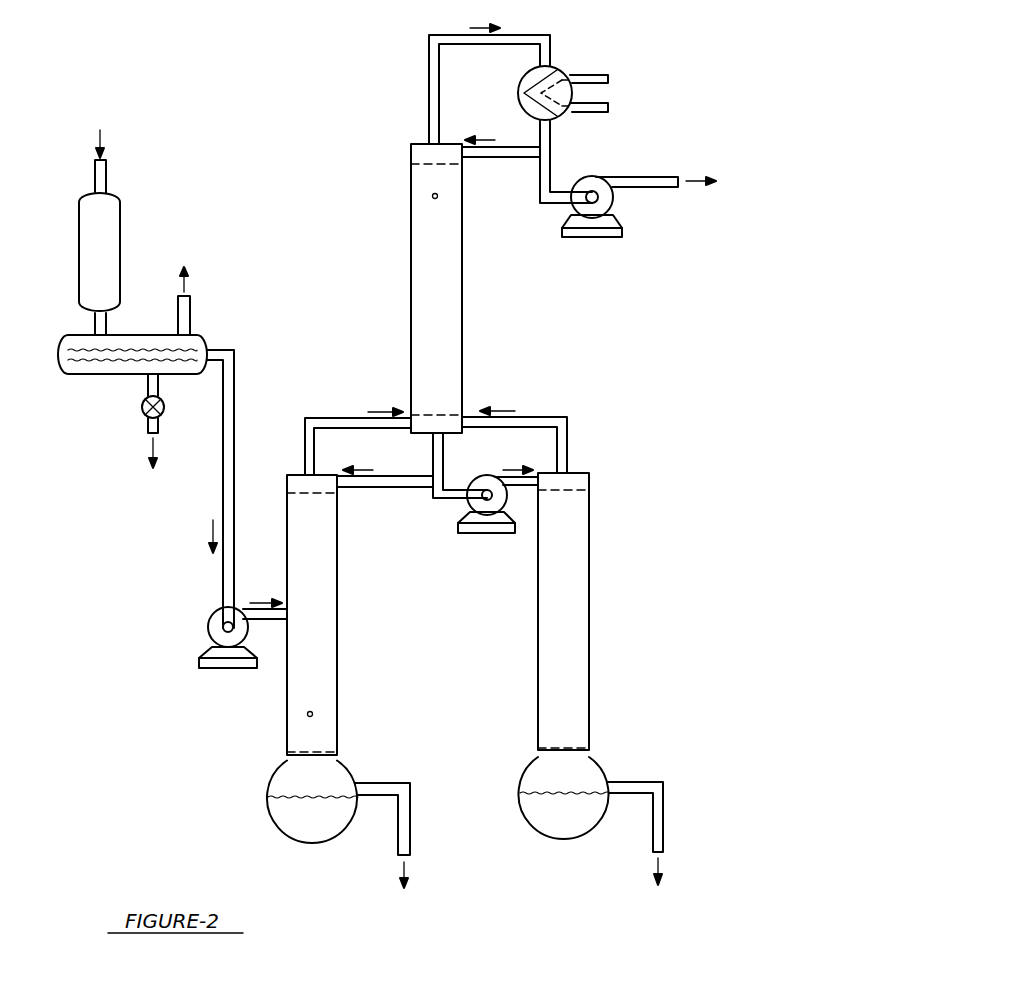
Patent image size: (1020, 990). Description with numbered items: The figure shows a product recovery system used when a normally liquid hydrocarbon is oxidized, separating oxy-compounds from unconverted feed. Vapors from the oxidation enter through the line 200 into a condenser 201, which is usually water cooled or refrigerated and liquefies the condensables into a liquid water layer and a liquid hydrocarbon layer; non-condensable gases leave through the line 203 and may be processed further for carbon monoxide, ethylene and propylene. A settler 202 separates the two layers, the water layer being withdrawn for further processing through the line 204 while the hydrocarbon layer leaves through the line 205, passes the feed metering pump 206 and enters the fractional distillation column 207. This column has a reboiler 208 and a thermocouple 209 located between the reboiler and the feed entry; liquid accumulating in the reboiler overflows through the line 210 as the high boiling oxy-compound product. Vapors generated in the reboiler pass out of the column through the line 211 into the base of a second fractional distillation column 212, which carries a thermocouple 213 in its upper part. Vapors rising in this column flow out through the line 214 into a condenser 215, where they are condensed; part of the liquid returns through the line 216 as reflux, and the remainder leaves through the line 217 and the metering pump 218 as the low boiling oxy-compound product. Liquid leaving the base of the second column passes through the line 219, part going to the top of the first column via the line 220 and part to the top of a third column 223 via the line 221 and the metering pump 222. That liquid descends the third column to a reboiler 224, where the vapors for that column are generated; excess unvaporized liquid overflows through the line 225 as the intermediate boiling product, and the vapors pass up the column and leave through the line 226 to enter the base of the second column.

The line 200 is at (106, 171).
The condenser 201 is at (120, 226).
The settler 202 is at (108, 375).
The line 203 is at (190, 310).
The line 204 is at (147, 425).
The line 205 is at (234, 417).
The feed metering pump 206 is at (218, 668).
The fractional distillation column 207 is at (337, 575).
The reboiler 208 is at (290, 835).
The thermocouple 209 is at (308, 714).
The line 210 is at (410, 816).
The line 211 is at (336, 401).
The second fractional distillation column 212 is at (411, 284).
The thermocouple 213 is at (432, 196).
The line 214 is at (429, 82).
The condenser 215 is at (519, 90).
The line 216 is at (521, 157).
The line 217 is at (540, 198).
The metering pump 218 is at (582, 237).
The line 219 is at (433, 456).
The line 220 is at (393, 488).
The line 221 is at (448, 501).
The metering pump 222 is at (480, 533).
The column 223 is at (589, 572).
The reboiler 224 is at (545, 833).
The line 225 is at (663, 812).
The line 226 is at (548, 402).